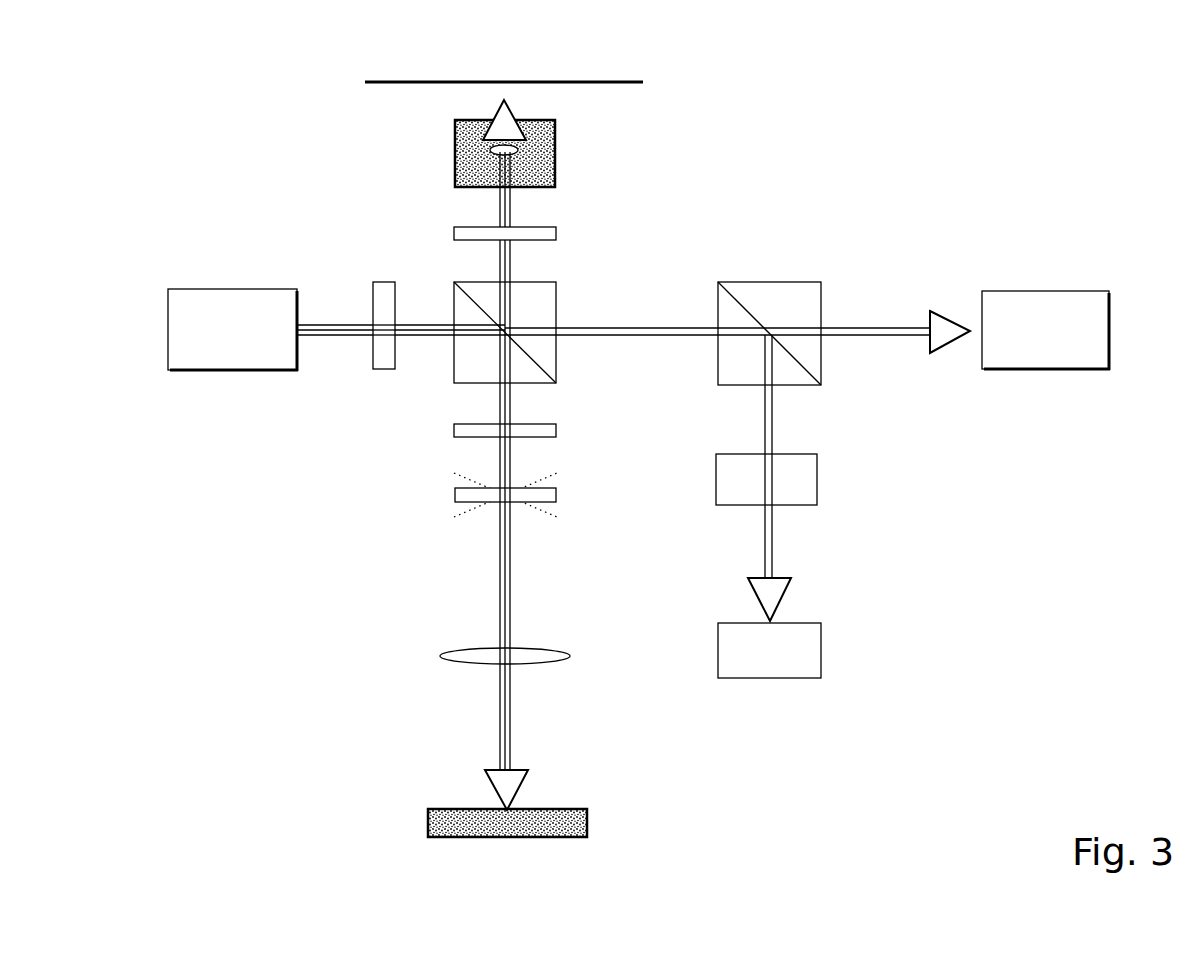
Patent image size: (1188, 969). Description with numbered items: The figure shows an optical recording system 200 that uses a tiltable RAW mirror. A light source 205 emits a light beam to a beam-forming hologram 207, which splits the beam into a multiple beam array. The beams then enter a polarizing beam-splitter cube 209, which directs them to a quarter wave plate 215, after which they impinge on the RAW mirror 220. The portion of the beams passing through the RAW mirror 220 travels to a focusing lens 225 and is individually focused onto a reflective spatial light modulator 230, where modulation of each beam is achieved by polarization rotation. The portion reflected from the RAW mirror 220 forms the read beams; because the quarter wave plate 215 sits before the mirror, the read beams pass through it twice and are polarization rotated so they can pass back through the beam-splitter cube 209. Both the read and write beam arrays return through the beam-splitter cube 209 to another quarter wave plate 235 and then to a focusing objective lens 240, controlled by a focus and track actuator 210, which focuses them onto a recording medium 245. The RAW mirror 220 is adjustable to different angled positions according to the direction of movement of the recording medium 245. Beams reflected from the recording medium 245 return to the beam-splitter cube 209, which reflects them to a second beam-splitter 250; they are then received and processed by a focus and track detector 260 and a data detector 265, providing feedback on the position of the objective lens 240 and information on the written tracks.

The optical recording system 200 is at (982, 90).
The light source 205 is at (249, 341).
The beam-forming hologram 207 is at (390, 372).
The polarizing beam-splitter cube 209 is at (556, 310).
The focus and track actuator 210 is at (455, 146).
The quarter wave plate 215 is at (556, 430).
The RAW mirror 220 is at (455, 493).
The focusing lens 225 is at (440, 656).
The reflective spatial light modulator 230 is at (428, 822).
The quarter wave plate 235 is at (556, 233).
The focusing objective lens 240 is at (556, 148).
The recording medium 245 is at (391, 80).
The beam-splitter 250 is at (818, 305).
The focus and track detector 260 is at (787, 666).
The data detector 265 is at (1062, 341).